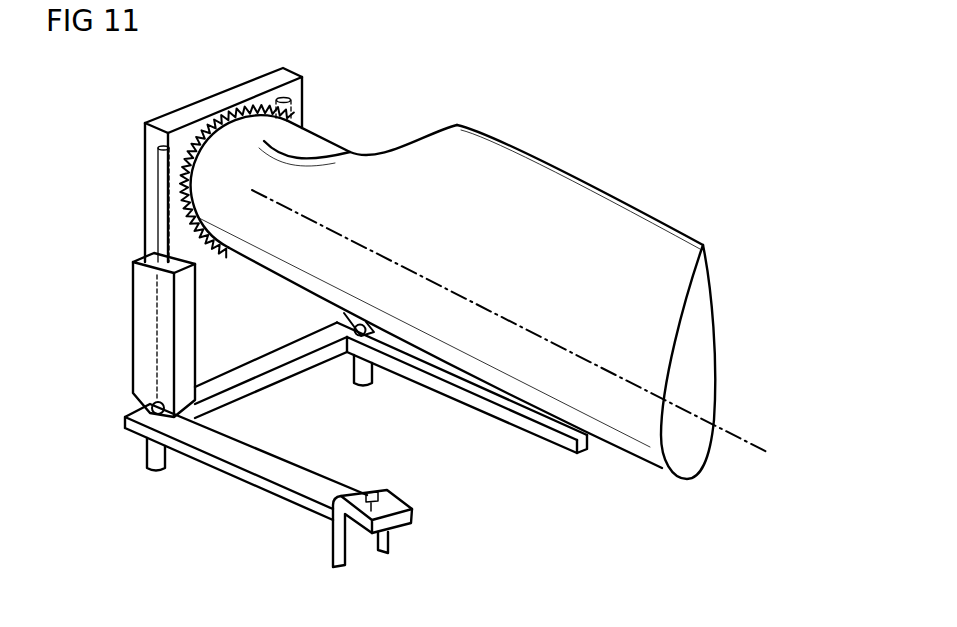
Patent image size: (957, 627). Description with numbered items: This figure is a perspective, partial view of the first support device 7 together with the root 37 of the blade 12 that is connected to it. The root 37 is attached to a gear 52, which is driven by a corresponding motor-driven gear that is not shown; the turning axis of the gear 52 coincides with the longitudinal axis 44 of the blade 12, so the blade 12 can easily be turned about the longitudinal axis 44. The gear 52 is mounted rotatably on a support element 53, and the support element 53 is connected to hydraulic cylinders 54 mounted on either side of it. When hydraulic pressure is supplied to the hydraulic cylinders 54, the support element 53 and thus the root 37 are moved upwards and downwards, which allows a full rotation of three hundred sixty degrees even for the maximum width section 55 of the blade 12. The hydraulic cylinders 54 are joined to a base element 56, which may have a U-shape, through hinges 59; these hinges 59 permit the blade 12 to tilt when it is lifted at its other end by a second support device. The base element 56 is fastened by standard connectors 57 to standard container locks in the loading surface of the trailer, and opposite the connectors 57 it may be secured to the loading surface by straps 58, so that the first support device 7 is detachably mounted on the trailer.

The first support device 7 is at (116, 149).
The blade 12 is at (660, 195).
The root 37 is at (307, 147).
The longitudinal axis 44 is at (760, 443).
The gear 52 is at (268, 107).
The support element 53 is at (188, 117).
The hydraulic cylinders 54 is at (160, 351).
The maximum width section 55 is at (483, 138).
The base element 56 is at (233, 382).
The connectors 57 is at (363, 385).
The straps 58 is at (340, 545).
The hinges 59 is at (150, 405).